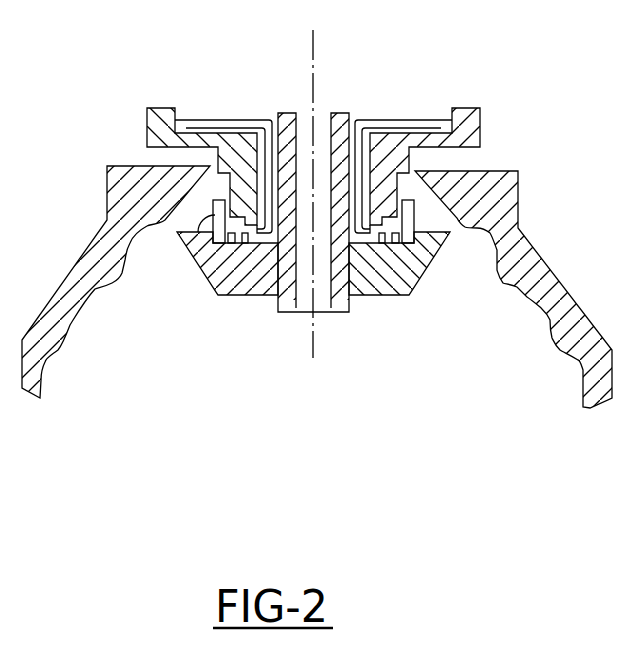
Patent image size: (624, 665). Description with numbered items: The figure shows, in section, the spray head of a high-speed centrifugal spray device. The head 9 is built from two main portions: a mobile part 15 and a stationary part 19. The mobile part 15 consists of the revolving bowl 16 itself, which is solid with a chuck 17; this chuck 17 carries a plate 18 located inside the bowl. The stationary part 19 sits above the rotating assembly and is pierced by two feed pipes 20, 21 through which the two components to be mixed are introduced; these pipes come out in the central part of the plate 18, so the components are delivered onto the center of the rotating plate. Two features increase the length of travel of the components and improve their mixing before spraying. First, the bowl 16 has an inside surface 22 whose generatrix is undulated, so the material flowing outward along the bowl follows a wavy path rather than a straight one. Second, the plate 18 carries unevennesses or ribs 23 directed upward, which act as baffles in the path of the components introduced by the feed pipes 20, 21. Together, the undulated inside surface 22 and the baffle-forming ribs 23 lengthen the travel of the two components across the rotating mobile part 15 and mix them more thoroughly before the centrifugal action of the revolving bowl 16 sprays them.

The head 9 is at (527, 143).
The mobile part 15 is at (523, 292).
The revolving bowl 16 is at (535, 268).
The chuck 17 is at (338, 305).
The plate 18 is at (240, 291).
The stationary part 19 is at (160, 117).
The feed pipe 20 is at (195, 128).
The feed pipe 21 is at (448, 113).
The inside surface 22 is at (85, 298).
The ribs 23 is at (198, 233).